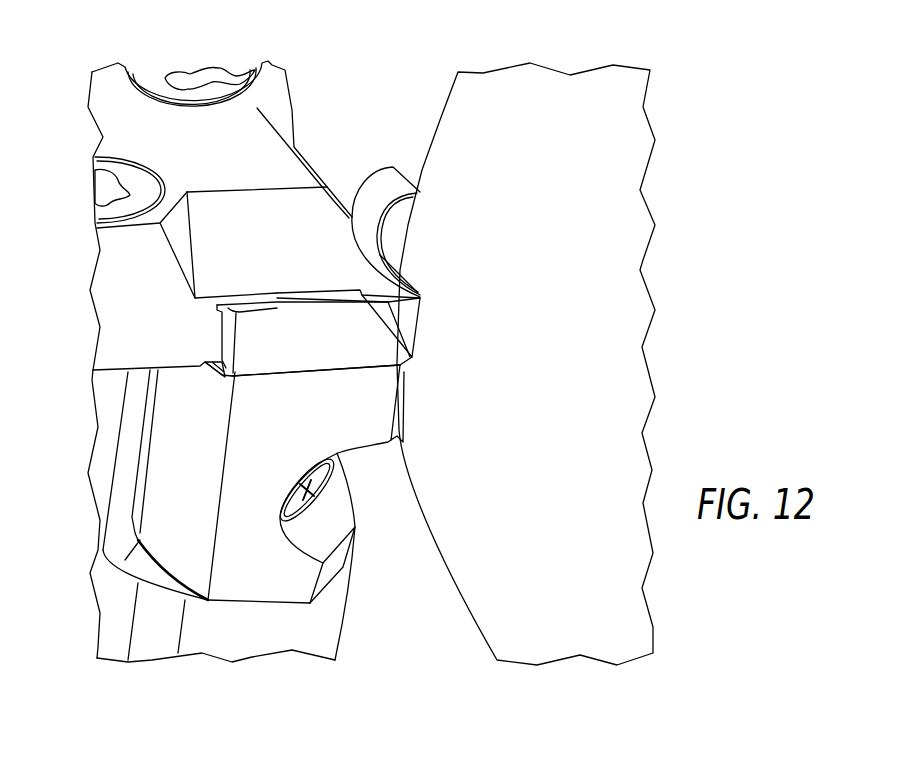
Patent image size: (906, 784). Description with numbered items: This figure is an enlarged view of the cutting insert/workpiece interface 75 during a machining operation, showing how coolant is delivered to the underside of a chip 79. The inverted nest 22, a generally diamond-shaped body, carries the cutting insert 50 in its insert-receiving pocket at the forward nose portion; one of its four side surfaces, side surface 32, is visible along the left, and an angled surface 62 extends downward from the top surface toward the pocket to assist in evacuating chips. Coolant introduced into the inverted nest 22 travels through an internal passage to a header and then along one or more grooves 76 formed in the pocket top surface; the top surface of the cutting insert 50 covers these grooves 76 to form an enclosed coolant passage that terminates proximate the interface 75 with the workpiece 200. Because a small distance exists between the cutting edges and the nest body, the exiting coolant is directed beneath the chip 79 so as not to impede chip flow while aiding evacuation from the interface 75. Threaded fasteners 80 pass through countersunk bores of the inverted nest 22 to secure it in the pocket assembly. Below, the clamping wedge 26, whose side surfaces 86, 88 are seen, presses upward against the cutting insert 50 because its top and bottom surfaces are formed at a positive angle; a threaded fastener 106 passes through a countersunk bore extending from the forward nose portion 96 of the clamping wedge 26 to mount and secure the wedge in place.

The inverted nest 22 is at (297, 108).
The clamping wedge 26 is at (357, 569).
The side surface 32 is at (130, 313).
The cutting insert 50 is at (418, 335).
The angled surface 62 is at (243, 228).
The cutting insert/workpiece interface 75 is at (424, 305).
The grooves 76 is at (400, 365).
The chip 79 is at (390, 227).
The threaded fastener 80 is at (128, 177).
The side surface 86 is at (243, 513).
The side surface 88 is at (193, 463).
The forward nose portion 96 is at (394, 437).
The threaded fastener 106 is at (300, 488).
The workpiece 200 is at (455, 163).